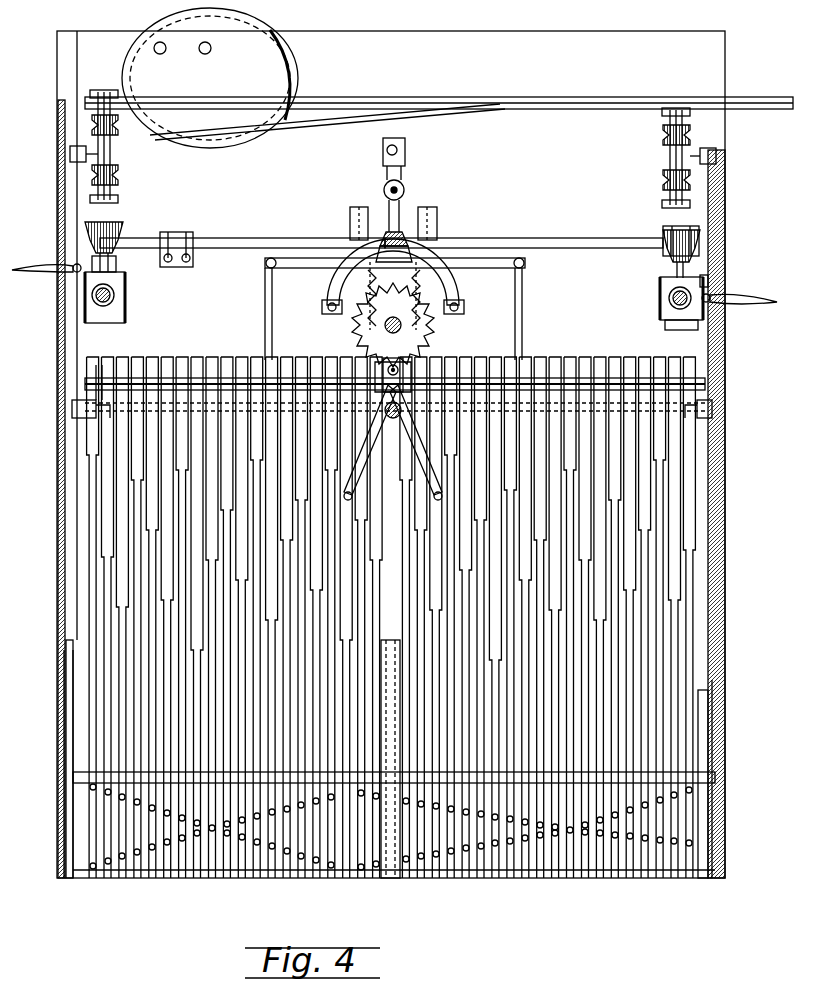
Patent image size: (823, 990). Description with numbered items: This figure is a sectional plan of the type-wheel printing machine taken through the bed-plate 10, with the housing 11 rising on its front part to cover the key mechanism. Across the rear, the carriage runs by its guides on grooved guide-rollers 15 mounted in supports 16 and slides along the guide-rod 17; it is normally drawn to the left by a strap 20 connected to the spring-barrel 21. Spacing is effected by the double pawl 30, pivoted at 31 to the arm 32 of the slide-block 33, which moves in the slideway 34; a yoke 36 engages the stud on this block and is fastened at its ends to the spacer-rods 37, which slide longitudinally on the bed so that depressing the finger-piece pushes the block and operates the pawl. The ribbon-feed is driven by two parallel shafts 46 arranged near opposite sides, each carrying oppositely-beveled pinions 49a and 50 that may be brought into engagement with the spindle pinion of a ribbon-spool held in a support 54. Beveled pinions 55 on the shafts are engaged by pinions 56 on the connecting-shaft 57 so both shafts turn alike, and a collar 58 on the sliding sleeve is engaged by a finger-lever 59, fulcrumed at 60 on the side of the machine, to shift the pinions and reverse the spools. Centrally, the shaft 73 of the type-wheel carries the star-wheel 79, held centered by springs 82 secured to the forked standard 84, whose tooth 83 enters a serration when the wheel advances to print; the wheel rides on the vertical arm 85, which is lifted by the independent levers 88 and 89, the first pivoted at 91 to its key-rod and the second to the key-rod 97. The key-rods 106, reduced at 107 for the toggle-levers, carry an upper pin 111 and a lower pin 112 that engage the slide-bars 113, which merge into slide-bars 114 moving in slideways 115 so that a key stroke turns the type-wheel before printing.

The bed-plate 10 is at (60, 446).
The housing 11 is at (60, 636).
The guide-rollers 15 is at (92, 125).
The supports 16 is at (90, 154).
The guide-rod 17 is at (565, 98).
The strap 20 is at (356, 96).
The spring-barrel 21 is at (263, 58).
The double pawl 30 is at (405, 150).
The pivot 31 is at (384, 190).
The arm 32 is at (400, 204).
The slide-block 33 is at (405, 226).
The slideway 34 is at (355, 216).
The yoke 36 is at (478, 248).
The spacer-rods 37 is at (266, 328).
The shafts 46 is at (100, 243).
The beveled pinion 49a is at (708, 278).
The beveled pinion 50 is at (698, 328).
The support 54 is at (85, 305).
The beveled pinions 55 is at (118, 228).
The pinions 56 is at (160, 242).
The connecting-shaft 57 is at (258, 239).
The collar 58 is at (116, 262).
The finger-lever 59 is at (50, 268).
The fulcrum 60 is at (76, 272).
The shaft 73 is at (352, 330).
The star-wheel 79 is at (440, 330).
The springs 82 is at (526, 263).
The tooth 83 is at (380, 238).
The forked standard 84 is at (440, 262).
The vertical arm 85 is at (400, 346).
The lever 88 is at (72, 412).
The lifting-lever 89 is at (712, 407).
The pivot 91 is at (80, 400).
The key-rod 97 is at (710, 522).
The key-rods 106 is at (536, 870).
The reduced portion 107 is at (690, 636).
The pin 111 is at (138, 790).
The pin 112 is at (692, 860).
The slide-bars 113 is at (693, 772).
The slide-bars 114 is at (66, 755).
The slideways 115 is at (714, 676).